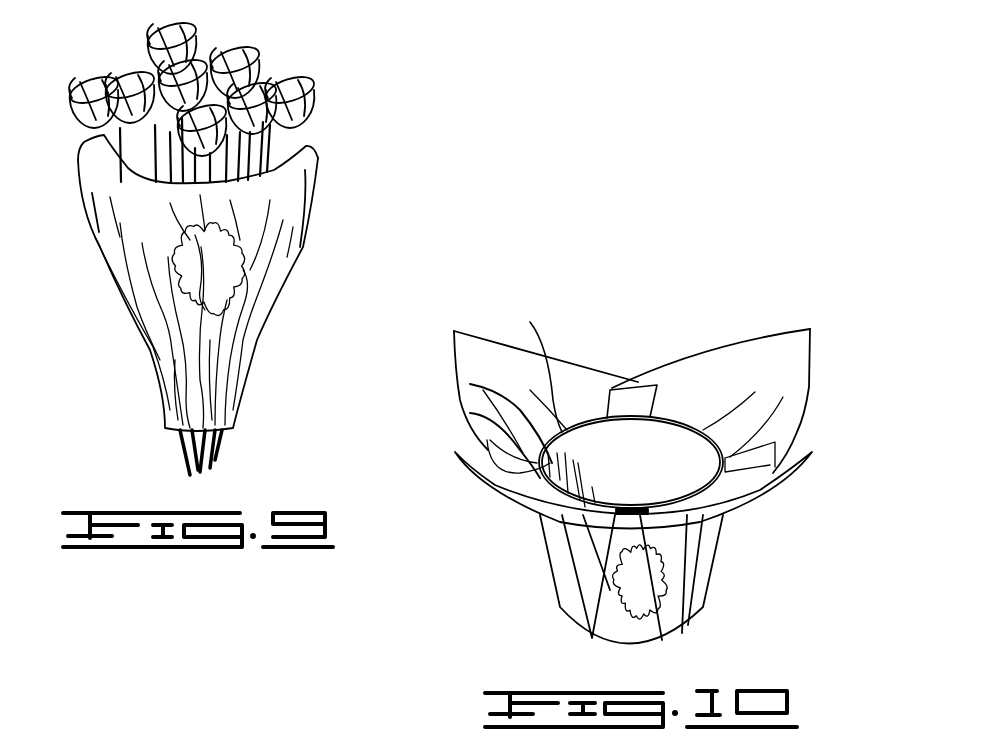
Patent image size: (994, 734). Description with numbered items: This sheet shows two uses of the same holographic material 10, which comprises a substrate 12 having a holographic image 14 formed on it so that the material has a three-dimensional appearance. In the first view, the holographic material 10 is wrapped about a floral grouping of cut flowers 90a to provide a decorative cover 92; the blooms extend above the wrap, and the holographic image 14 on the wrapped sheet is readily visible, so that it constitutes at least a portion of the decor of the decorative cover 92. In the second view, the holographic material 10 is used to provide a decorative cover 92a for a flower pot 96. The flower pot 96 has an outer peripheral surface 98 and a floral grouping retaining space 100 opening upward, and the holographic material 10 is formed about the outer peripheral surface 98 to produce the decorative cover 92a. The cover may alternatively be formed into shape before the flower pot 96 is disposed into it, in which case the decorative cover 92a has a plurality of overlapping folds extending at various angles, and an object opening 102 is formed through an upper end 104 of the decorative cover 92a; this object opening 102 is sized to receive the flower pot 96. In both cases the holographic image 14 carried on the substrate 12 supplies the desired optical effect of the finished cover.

In FIG. 9, the holographic material 10 is at (291, 263).
In FIG. 10, the holographic material 10 is at (812, 360).
In FIG. 10, the substrate 12 is at (810, 452).
In FIG. 9, the holographic image 14 is at (190, 283).
In FIG. 10, the holographic image 14 is at (797, 468).
In FIG. 9, the cut flowers 90a is at (245, 57).
In FIG. 9, the decorative cover 92 is at (378, 132).
In FIG. 10, the decorative cover 92a is at (788, 272).
In FIG. 10, the flower pot 96 is at (470, 413).
In FIG. 10, the outer peripheral surface 98 is at (530, 322).
In FIG. 10, the floral grouping retaining space 100 is at (660, 460).
In FIG. 10, the object opening 102 is at (470, 384).
In FIG. 10, the upper end 104 is at (638, 397).